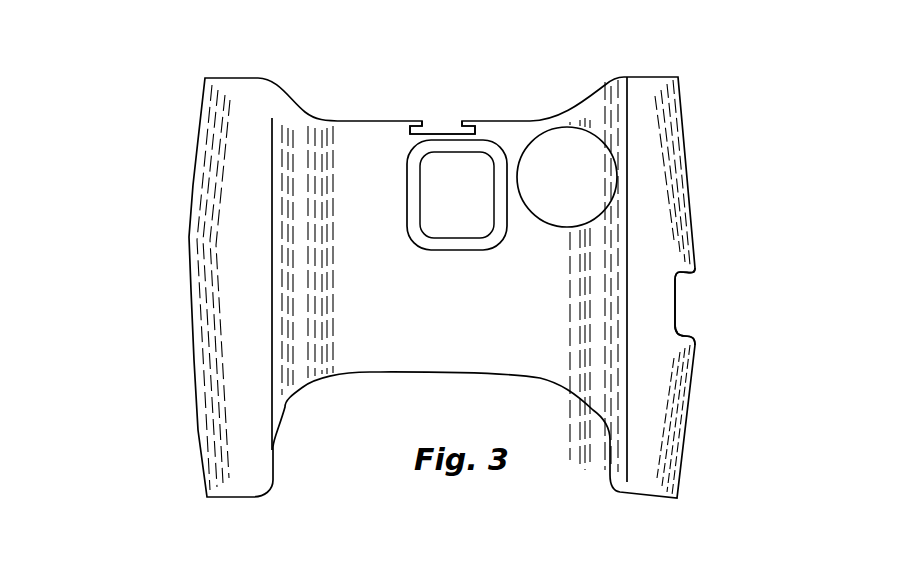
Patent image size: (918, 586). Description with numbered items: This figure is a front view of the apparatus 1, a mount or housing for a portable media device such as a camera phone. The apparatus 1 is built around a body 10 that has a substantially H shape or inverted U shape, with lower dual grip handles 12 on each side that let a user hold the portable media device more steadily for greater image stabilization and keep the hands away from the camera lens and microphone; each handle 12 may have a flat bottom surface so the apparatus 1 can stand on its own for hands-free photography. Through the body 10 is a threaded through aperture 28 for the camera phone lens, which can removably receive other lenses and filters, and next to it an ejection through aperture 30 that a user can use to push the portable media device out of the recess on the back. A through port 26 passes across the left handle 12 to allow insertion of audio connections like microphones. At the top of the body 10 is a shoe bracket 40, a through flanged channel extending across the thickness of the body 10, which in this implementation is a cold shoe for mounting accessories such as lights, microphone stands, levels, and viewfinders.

The apparatus 1 is at (137, 103).
The body 10 is at (689, 131).
The lower dual grip handles 12 is at (217, 406).
The through port 26 is at (688, 302).
The through aperture 28 is at (457, 195).
The ejection through aperture 30 is at (567, 177).
The shoe bracket 40 is at (439, 124).